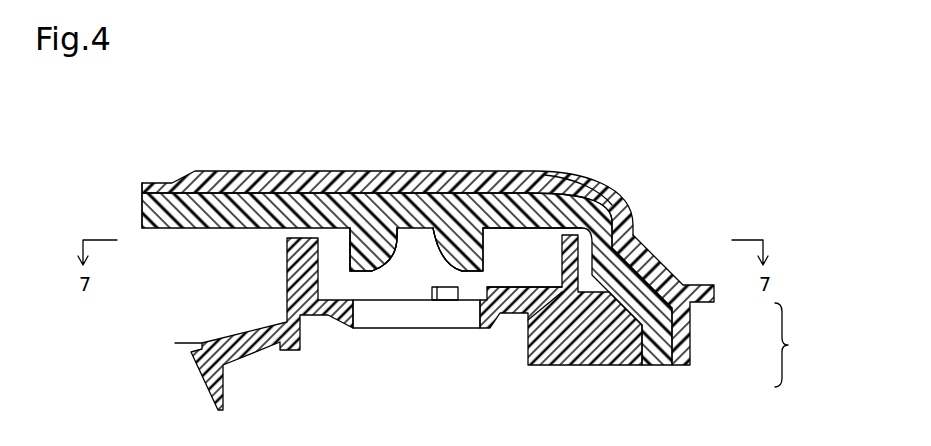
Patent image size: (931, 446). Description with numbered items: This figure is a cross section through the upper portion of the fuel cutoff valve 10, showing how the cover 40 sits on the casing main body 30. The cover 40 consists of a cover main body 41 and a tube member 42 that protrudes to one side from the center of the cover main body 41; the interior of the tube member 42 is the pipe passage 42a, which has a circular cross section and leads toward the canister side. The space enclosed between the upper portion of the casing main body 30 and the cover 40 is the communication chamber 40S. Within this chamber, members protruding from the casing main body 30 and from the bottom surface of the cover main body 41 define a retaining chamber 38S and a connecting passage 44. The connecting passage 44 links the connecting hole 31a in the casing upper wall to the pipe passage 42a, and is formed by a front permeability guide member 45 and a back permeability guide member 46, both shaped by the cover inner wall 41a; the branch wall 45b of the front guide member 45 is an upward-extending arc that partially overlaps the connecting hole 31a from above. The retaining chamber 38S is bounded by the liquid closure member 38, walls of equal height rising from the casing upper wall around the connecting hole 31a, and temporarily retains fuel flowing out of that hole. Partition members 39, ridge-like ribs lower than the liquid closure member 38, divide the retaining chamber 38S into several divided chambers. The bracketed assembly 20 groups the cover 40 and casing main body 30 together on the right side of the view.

The fuel cutoff valve 10 is at (690, 200).
The case 20 is at (794, 345).
The casing main body 30 is at (643, 358).
The connecting hole 31a is at (403, 320).
The liquid closure member 38 is at (287, 263).
The retaining chamber 38S is at (510, 267).
The partition member 39 is at (528, 292).
The cover 40 is at (690, 305).
The communication chamber 40S is at (397, 257).
The cover main body 41 is at (507, 172).
The cover inner wall 41a is at (556, 190).
The tube member 42 is at (160, 181).
The pipe passage 42a is at (157, 297).
The connecting passage 44 is at (404, 264).
The front permeability guide member 45 is at (350, 273).
The branch wall 45b is at (377, 267).
The back permeability guide member 46 is at (463, 270).